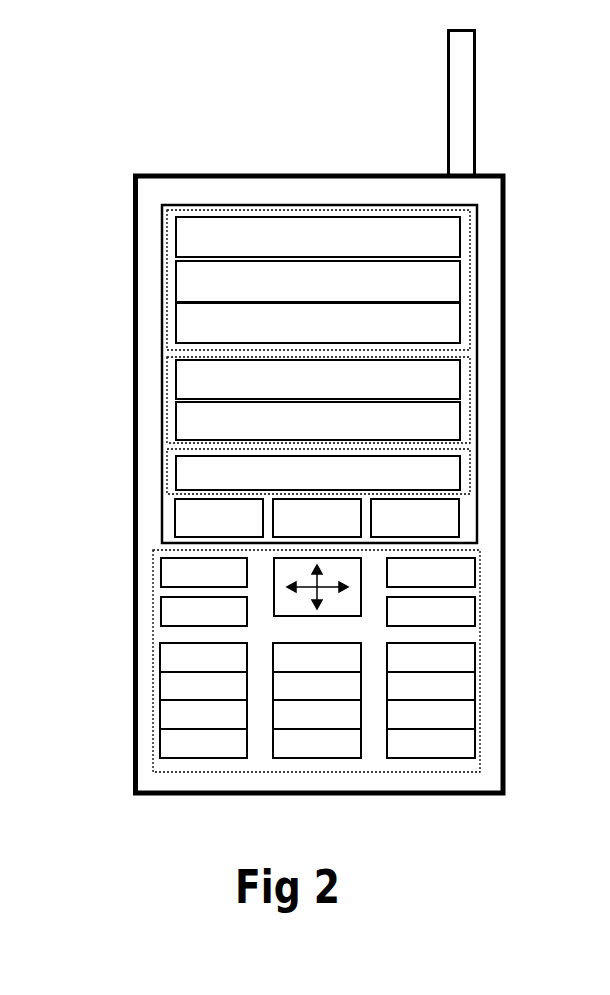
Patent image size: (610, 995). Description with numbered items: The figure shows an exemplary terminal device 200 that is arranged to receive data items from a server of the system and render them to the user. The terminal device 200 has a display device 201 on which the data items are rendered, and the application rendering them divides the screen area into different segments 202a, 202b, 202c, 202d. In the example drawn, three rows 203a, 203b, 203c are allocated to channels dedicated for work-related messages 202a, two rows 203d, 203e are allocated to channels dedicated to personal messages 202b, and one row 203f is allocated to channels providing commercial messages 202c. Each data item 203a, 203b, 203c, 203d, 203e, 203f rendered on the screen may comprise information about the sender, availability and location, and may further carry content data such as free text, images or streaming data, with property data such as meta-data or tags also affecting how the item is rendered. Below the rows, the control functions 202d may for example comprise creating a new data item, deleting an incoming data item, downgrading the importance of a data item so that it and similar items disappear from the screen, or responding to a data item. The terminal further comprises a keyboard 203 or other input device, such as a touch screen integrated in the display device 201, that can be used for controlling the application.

The terminal device 200 is at (320, 412).
The display device 201 is at (319, 340).
The segment for work-related messages 202a is at (310, 280).
The segment for personal messages 202b is at (310, 400).
The segment for commercial messages 202c is at (309, 471).
The control functions 202d is at (460, 522).
The keyboard 203 is at (481, 632).
The data item row 203a is at (176, 243).
The data item row 203b is at (176, 285).
The data item row 203c is at (176, 328).
The data item row 203d is at (176, 372).
The data item row 203e is at (176, 414).
The data item row 203f is at (176, 472).